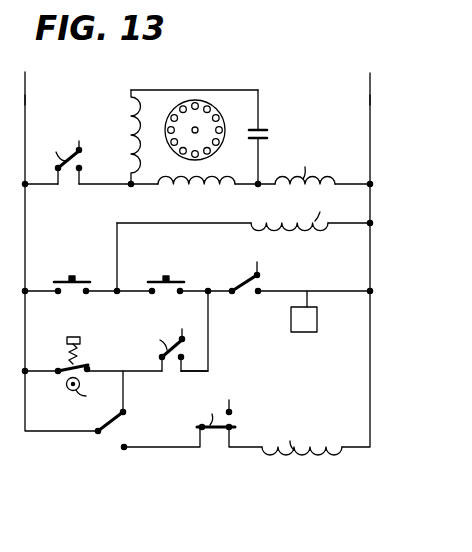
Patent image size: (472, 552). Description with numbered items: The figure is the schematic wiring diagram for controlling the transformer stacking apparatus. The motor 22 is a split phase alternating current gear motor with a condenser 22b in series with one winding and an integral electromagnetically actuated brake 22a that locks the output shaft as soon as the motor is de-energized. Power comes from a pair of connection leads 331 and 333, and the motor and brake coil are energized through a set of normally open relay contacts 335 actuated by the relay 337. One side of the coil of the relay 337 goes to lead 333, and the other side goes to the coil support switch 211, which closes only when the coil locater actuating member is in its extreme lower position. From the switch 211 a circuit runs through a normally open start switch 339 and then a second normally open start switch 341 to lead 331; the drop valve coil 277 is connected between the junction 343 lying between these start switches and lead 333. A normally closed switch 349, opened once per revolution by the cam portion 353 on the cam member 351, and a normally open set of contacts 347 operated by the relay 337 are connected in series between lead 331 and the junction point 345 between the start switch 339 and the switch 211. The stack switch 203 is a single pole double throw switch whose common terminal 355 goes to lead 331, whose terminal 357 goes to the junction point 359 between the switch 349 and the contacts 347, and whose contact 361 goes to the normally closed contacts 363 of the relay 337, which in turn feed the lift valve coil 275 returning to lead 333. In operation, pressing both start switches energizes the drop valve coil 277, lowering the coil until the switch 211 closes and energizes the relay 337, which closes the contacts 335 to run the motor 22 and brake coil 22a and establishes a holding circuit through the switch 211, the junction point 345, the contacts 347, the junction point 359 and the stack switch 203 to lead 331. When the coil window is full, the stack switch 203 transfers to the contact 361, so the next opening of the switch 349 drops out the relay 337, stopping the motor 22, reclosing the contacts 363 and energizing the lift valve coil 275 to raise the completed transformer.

The motor 22 is at (202, 88).
The brake 22a is at (330, 179).
The condenser 22b is at (265, 129).
The stack switch 203 is at (106, 439).
The coil support switch 211 is at (244, 300).
The lift valve coil 275 is at (287, 450).
The drop valve coil 277 is at (294, 228).
The connection lead 331 is at (26, 100).
The connection lead 333 is at (370, 99).
The relay contacts 335 is at (90, 157).
The relay 337 is at (294, 334).
The start switch 339 is at (160, 280).
The start switch 341 is at (65, 280).
The junction 343 is at (117, 292).
The junction point 345 is at (215, 291).
The relay contacts 347 is at (172, 375).
The switch 349 is at (61, 358).
The cam member 351 is at (55, 382).
The cam portion 353 is at (92, 390).
The common terminal 355 is at (97, 431).
The terminal 357 is at (127, 412).
The junction point 359 is at (122, 370).
The contact 361 is at (124, 448).
The relay contacts 363 is at (217, 450).